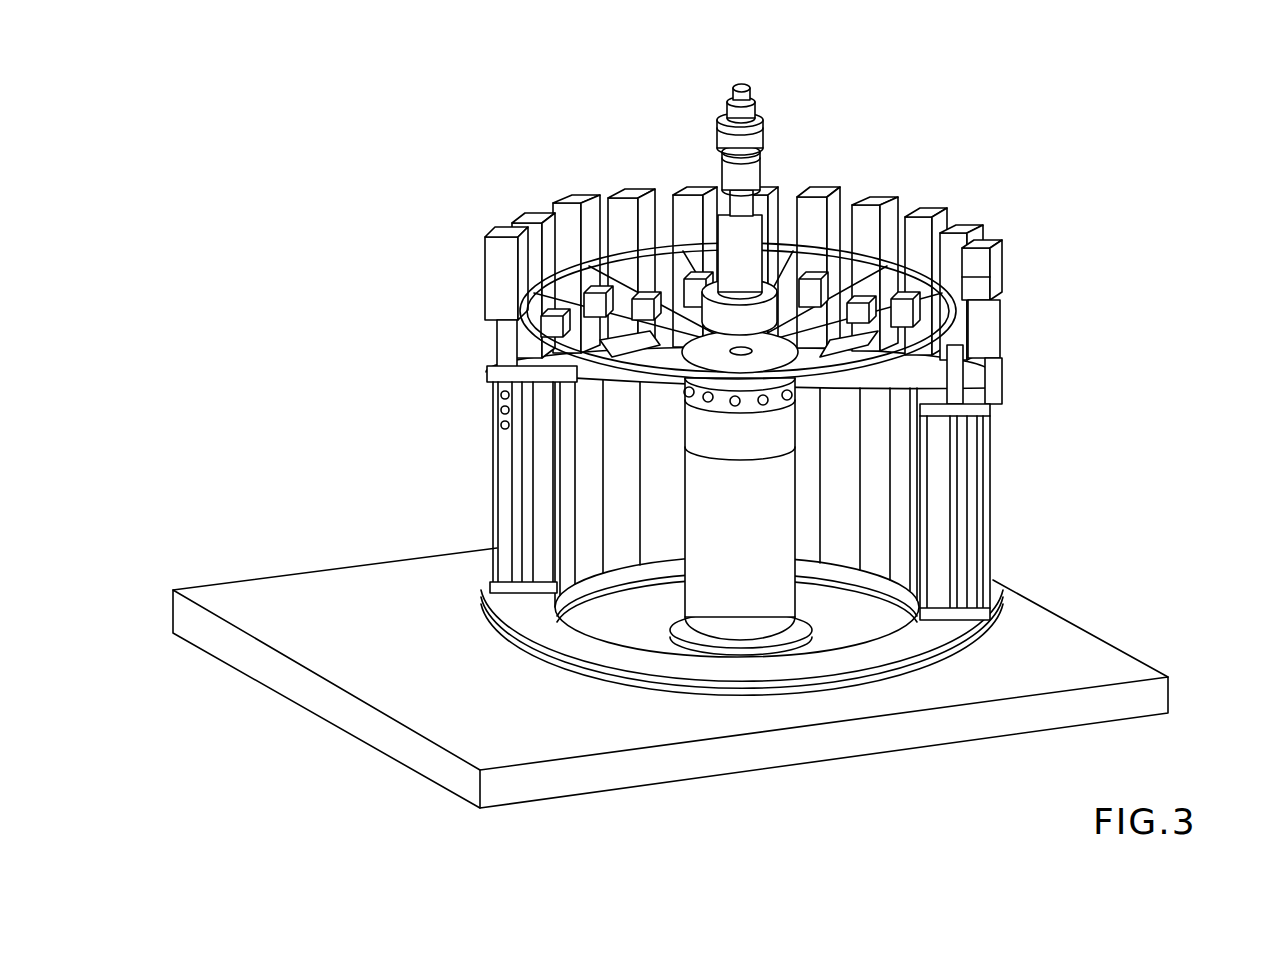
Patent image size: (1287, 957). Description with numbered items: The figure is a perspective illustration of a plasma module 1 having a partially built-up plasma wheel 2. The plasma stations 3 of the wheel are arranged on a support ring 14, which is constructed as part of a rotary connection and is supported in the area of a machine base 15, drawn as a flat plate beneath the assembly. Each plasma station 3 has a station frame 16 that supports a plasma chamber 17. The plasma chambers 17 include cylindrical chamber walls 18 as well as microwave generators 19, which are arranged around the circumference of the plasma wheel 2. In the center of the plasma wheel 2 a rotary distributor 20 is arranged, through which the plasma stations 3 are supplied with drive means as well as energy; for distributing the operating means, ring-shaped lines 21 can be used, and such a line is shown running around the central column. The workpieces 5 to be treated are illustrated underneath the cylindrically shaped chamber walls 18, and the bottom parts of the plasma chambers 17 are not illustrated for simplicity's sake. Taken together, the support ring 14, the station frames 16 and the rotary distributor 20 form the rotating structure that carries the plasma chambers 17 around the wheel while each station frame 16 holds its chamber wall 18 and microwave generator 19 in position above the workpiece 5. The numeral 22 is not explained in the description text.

The plasma module 1 is at (1147, 640).
The plasma wheel 2 is at (992, 527).
The plasma station 3 is at (1007, 400).
The workpiece 5 is at (993, 443).
The support ring 14 is at (512, 620).
The machine base 15 is at (337, 637).
The station frame 16 is at (937, 560).
The plasma chamber 17 is at (1008, 355).
The chamber wall 18 is at (997, 371).
The microwave generator 19 is at (1012, 290).
The rotary distributor 20 is at (780, 138).
The ring-shaped line 21 is at (710, 421).
The ring 22 is at (517, 305).